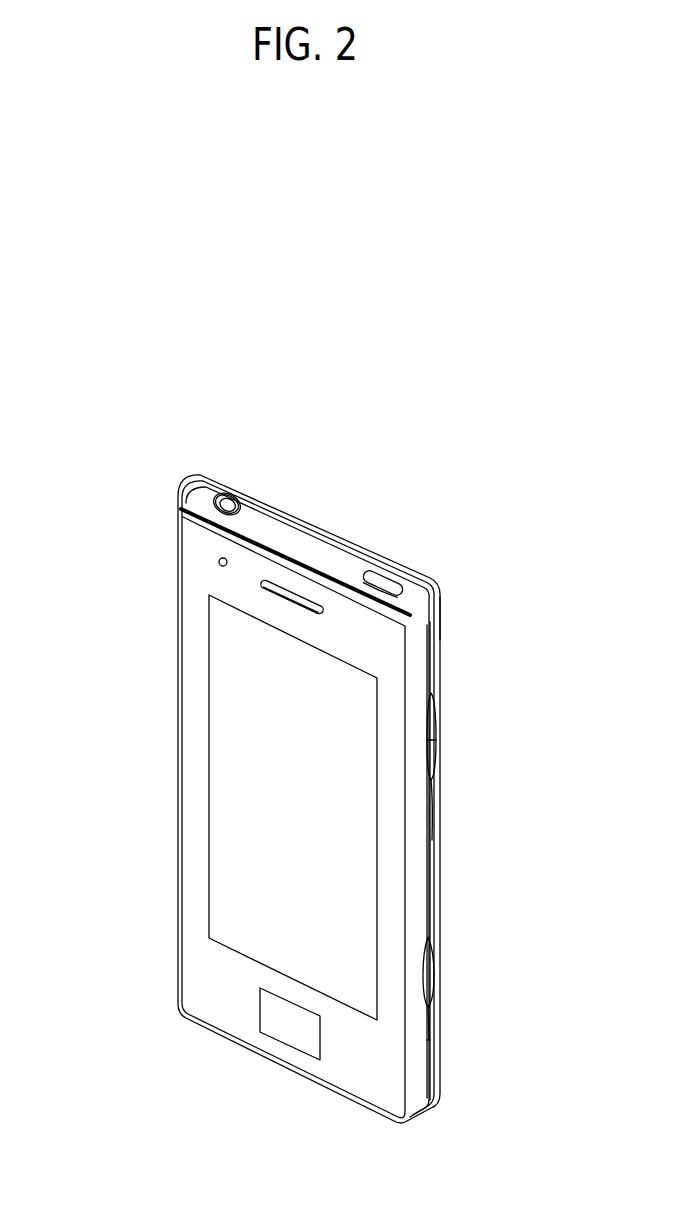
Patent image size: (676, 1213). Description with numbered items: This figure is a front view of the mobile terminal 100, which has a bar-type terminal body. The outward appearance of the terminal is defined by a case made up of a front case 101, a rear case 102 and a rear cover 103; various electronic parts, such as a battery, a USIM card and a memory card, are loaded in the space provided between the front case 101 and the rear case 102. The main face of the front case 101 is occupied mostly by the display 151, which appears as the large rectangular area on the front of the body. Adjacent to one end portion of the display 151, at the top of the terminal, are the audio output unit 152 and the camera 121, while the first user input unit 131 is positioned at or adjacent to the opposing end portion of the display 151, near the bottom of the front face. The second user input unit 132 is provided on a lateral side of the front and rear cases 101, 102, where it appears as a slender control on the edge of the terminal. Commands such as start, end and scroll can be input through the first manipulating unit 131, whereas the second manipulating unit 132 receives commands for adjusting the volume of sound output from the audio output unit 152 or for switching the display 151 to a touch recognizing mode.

The mobile terminal 100 is at (162, 366).
The front case 101 is at (411, 1115).
The rear case 102 is at (432, 1062).
The rear cover 103 is at (440, 588).
The camera 121 is at (219, 562).
The user input unit 131 is at (288, 1033).
The user input unit 132 is at (436, 740).
The display 151 is at (222, 770).
The audio output unit 152 is at (290, 588).